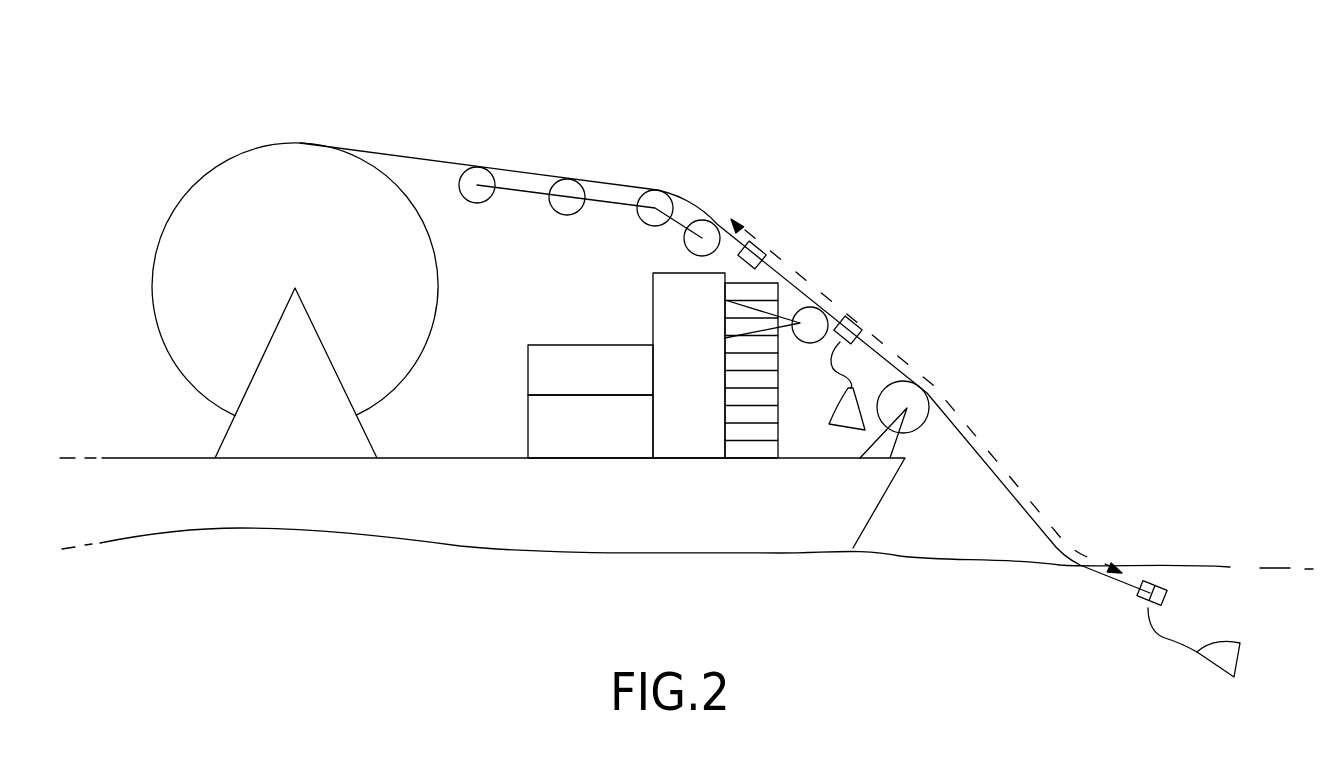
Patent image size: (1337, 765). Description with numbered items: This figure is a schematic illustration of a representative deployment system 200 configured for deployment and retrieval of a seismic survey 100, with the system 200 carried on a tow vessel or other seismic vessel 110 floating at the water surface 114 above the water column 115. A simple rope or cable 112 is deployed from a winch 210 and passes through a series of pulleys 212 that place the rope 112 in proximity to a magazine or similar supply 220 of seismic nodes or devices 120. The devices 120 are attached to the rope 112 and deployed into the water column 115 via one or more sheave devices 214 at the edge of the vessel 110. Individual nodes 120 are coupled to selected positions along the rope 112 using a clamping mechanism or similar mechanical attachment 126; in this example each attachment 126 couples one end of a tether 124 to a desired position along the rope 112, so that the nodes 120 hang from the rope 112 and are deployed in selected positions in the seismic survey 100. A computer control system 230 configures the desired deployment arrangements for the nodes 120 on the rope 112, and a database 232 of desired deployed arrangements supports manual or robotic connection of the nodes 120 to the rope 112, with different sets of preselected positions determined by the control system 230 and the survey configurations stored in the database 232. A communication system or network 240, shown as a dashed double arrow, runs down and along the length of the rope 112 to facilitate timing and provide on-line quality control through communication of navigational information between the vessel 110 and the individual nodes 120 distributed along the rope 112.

The seismic survey 100 is at (1179, 438).
The seismic vessel 110 is at (509, 510).
The rope 112 is at (398, 155).
The water surface 114 is at (1227, 563).
The water column 115 is at (1009, 640).
The seismic node 120 is at (862, 397).
The tether 124 is at (865, 345).
The clamping mechanism 126 is at (762, 247).
The deployment system 200 is at (824, 131).
The winch 210 is at (262, 173).
The pulleys 212 is at (565, 188).
The sheave device 214 is at (927, 393).
The magazine 220 is at (663, 315).
The computer control system 230 is at (573, 440).
The database 232 is at (573, 383).
The communication system 240 is at (1050, 530).